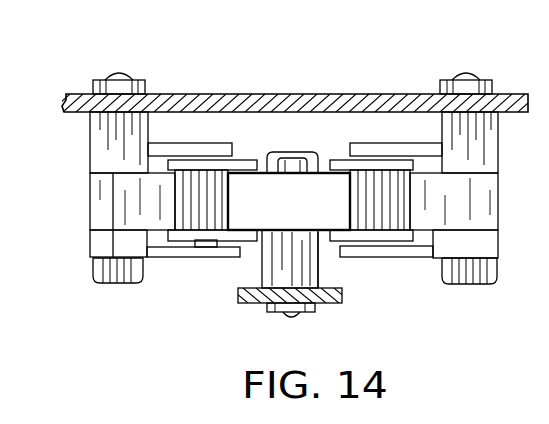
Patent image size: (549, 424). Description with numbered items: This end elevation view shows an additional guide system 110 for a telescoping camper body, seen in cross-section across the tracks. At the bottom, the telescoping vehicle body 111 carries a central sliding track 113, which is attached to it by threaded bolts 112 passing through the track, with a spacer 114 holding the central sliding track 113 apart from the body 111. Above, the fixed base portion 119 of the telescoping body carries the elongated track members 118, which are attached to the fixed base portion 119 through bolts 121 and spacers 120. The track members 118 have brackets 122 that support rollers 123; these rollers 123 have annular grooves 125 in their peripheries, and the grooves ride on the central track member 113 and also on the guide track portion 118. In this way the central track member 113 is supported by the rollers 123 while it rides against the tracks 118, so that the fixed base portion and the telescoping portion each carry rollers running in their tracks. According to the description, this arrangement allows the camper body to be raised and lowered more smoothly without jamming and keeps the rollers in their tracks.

The guide system 110 is at (354, 74).
The telescoping vehicle body 111 is at (243, 297).
The threaded bolts 112 is at (295, 318).
The central sliding track 113 is at (272, 213).
The spacer 114 is at (313, 278).
The track members 118 is at (98, 207).
The fixed base portion 119 is at (315, 105).
The spacers 120 is at (490, 172).
The bolts 121 is at (466, 80).
The brackets 122 is at (405, 252).
The rollers 123 is at (204, 248).
The annular grooves 125 is at (204, 192).